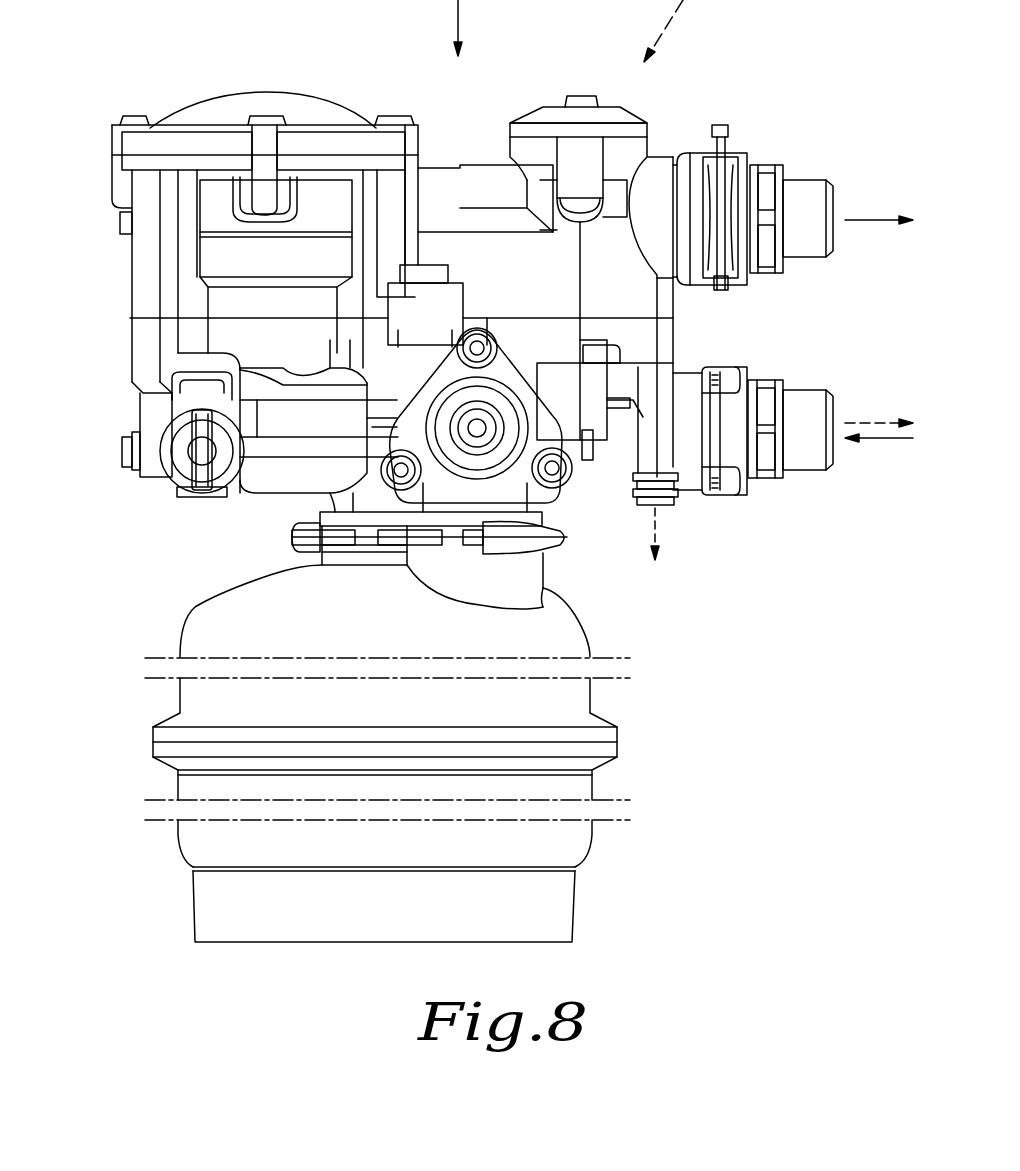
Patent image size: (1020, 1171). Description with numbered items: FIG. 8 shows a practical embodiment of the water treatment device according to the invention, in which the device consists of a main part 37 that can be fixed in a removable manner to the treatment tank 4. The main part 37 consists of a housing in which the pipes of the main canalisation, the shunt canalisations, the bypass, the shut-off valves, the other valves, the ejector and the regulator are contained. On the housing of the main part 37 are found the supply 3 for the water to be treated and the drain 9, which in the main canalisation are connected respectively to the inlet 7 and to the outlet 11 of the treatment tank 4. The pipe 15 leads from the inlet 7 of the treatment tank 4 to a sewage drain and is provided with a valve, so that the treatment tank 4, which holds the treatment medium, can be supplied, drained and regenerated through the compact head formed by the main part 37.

The main part 37 is at (103, 92).
The drain 9 is at (812, 242).
The supply 3 is at (812, 450).
The pipe 15 is at (663, 467).
The outlet 11 is at (333, 553).
The inlet 7 is at (528, 577).
The treatment tank 4 is at (578, 703).